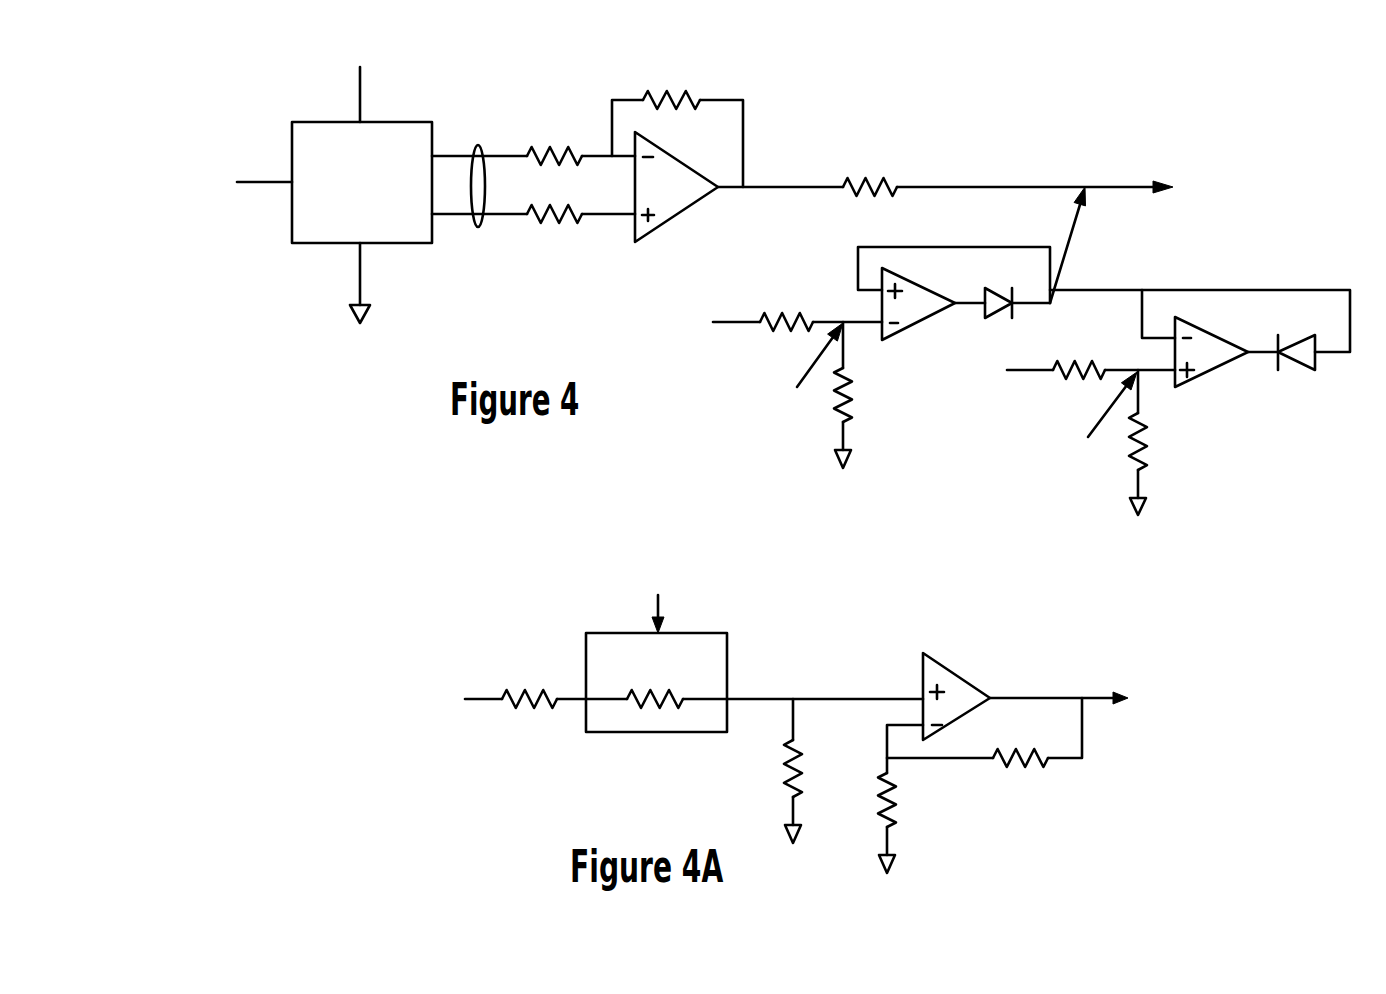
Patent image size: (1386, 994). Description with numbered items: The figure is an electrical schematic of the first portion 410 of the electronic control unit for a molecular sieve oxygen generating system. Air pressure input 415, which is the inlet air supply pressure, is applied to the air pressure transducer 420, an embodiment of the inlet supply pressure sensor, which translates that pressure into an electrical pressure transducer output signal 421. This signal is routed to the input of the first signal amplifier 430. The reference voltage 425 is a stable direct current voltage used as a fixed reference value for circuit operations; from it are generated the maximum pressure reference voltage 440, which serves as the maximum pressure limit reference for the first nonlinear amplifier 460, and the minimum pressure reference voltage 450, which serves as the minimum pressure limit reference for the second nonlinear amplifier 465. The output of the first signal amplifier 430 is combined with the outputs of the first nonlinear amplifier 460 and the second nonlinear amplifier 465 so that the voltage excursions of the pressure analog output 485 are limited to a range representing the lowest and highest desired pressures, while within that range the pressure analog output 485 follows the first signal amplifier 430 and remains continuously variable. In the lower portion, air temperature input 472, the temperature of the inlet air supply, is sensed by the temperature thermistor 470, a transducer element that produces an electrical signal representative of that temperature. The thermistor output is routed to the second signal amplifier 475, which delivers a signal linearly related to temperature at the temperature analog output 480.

In FIG. 4, the first portion of electronic control unit 410 is at (772, 44).
In FIG. 4, the air pressure input 415 is at (242, 192).
In FIG. 4, the air pressure transducer 420 is at (410, 241).
In FIG. 4, the pressure transducer output signal 421 is at (480, 227).
In FIG. 4, the reference voltage 425 is at (383, 62).
In FIG. 4A, the reference voltage 425 is at (480, 701).
In FIG. 4, the first signal amplifier 430 is at (682, 203).
In FIG. 4, the maximum pressure reference voltage 440 is at (755, 404).
In FIG. 4, the minimum pressure reference voltage 450 is at (1045, 450).
In FIG. 4, the first nonlinear amplifier 460 is at (912, 327).
In FIG. 4, the second nonlinear amplifier 465 is at (1207, 373).
In FIG. 4A, the temperature thermistor 470 is at (660, 728).
In FIG. 4A, the air temperature input 472 is at (670, 563).
In FIG. 4A, the second signal amplifier 475 is at (963, 677).
In FIG. 4A, the temperature analog output 480 is at (1145, 712).
In FIG. 4, the pressure analog output 485 is at (1195, 170).